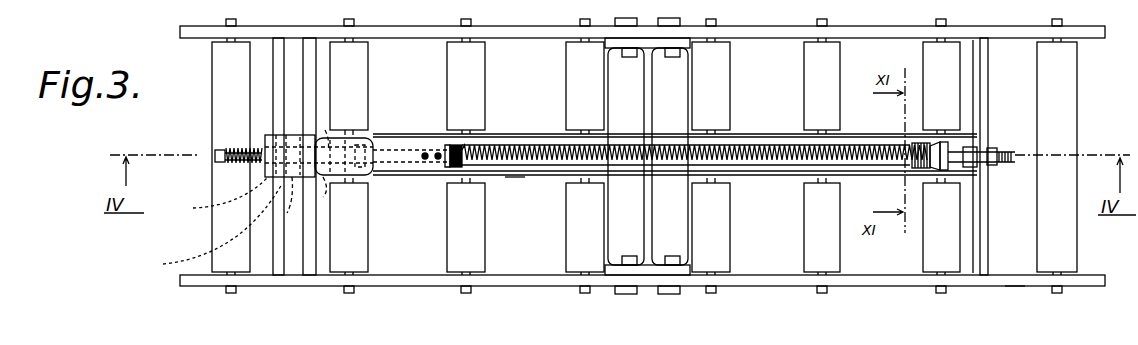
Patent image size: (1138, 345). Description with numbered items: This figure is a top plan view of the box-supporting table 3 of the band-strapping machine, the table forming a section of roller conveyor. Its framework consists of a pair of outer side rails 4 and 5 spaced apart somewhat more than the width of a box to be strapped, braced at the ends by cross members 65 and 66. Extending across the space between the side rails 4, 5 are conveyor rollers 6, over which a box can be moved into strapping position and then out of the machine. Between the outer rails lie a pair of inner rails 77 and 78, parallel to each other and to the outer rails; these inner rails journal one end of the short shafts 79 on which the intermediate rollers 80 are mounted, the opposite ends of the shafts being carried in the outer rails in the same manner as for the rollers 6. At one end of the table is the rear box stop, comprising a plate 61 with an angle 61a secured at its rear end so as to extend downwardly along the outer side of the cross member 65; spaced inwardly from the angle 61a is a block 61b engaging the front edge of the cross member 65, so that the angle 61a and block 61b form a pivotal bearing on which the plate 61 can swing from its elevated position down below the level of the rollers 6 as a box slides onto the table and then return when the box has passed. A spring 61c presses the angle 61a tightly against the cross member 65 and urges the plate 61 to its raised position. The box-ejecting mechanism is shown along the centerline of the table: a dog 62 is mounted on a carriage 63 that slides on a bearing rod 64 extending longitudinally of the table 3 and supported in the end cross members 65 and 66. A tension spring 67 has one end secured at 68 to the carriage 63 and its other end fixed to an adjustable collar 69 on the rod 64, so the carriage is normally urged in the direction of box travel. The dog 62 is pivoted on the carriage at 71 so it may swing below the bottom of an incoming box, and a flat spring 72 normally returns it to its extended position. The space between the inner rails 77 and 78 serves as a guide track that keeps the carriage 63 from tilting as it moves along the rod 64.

The box-supporting table 3 is at (1018, 294).
The side rail 4 is at (530, 26).
The side rail 5 is at (514, 284).
The conveyor roller 6 is at (218, 229).
The plate 61 is at (366, 134).
The angle 61a is at (218, 196).
The block 61b is at (208, 229).
The spring 61c is at (257, 150).
The dog 62 is at (325, 198).
The carriage 63 is at (447, 172).
The bearing rod 64 is at (673, 153).
The cross member 65 is at (273, 72).
The cross member 66 is at (983, 217).
The tension spring 67 is at (763, 168).
The spring attachment point 68 is at (460, 157).
The adjustable collar 69 is at (917, 170).
The pivot 71 is at (332, 128).
The flat spring 72 is at (408, 156).
The inner rail 77 is at (527, 132).
The inner rail 78 is at (516, 181).
The short shaft 79 is at (462, 292).
The intermediate roller 80 is at (568, 240).